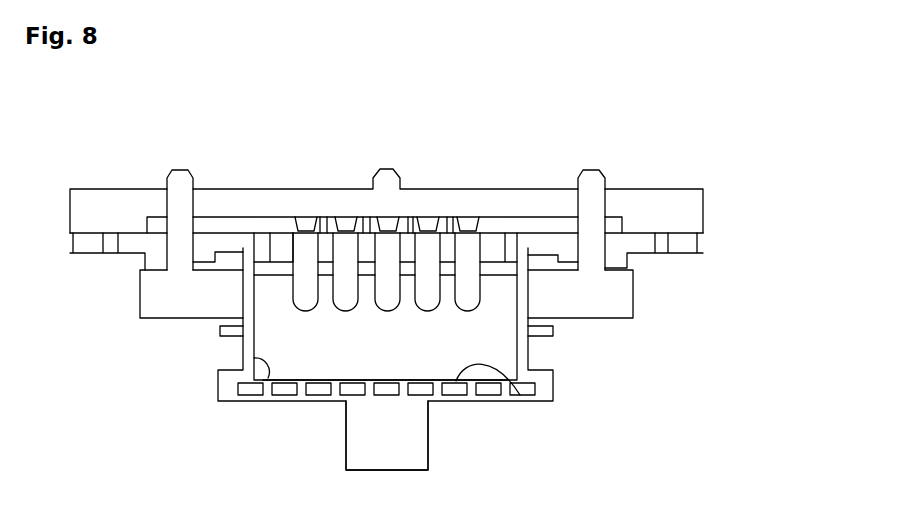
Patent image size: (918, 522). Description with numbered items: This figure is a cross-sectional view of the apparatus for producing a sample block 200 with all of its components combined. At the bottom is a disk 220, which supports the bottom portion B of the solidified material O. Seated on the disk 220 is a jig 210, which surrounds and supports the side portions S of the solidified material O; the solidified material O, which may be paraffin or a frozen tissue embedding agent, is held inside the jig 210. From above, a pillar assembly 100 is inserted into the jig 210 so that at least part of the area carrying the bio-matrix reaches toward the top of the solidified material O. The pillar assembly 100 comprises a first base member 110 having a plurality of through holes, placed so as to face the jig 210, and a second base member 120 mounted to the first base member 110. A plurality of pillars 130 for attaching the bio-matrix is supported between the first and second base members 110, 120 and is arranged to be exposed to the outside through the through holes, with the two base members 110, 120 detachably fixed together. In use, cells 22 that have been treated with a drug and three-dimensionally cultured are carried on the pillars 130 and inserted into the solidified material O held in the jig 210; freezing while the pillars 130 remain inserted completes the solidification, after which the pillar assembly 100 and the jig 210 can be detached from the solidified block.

The apparatus for producing a sample block 200 is at (82, 113).
The pillar assembly 100 is at (777, 199).
The second base member 120 is at (703, 206).
The first base member 110 is at (703, 240).
The pillars 130 is at (480, 252).
The jig 210 is at (650, 296).
The disk 220 is at (428, 448).
The cells 22 is at (302, 313).
The solidified material O is at (250, 337).
The side portions S is at (241, 403).
The bottom portion B is at (520, 395).